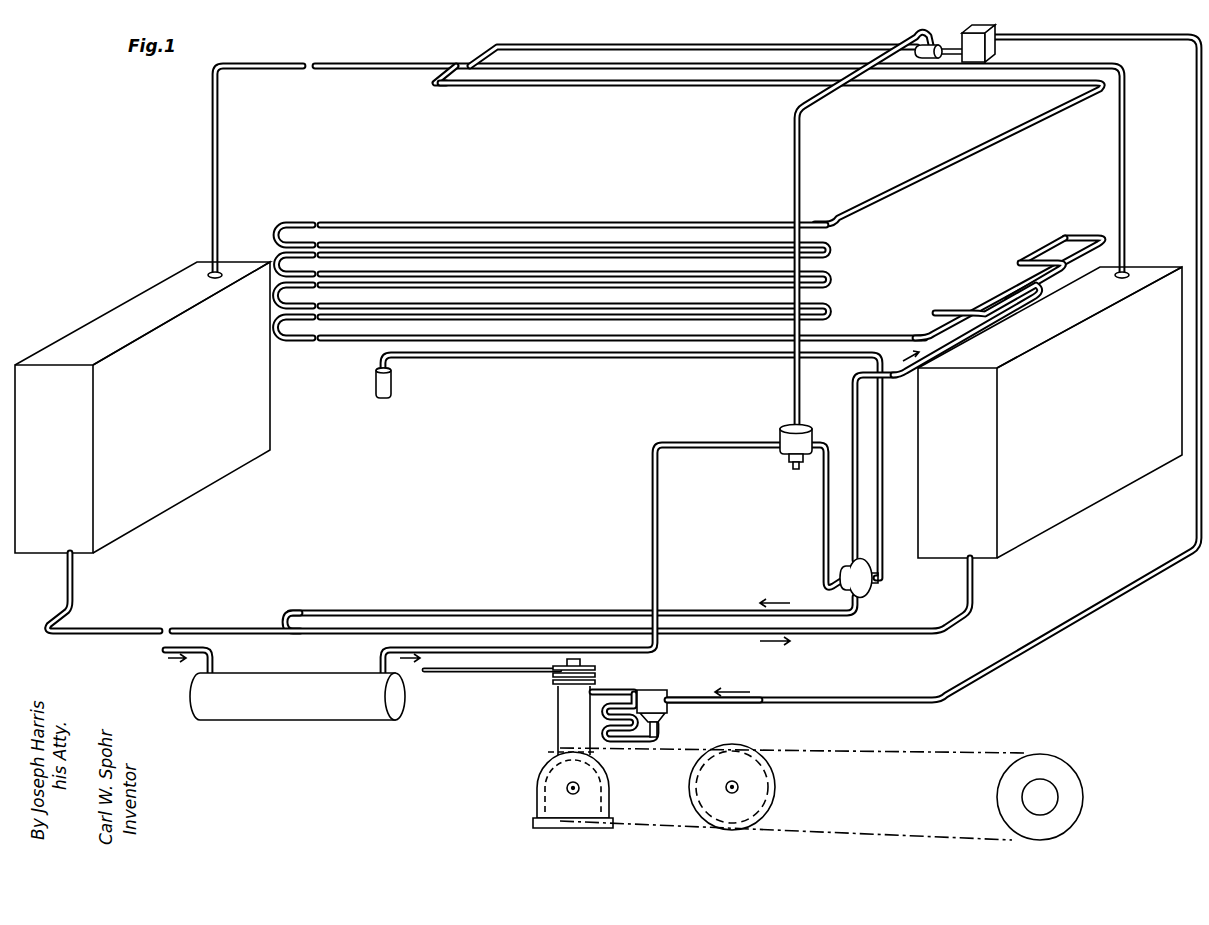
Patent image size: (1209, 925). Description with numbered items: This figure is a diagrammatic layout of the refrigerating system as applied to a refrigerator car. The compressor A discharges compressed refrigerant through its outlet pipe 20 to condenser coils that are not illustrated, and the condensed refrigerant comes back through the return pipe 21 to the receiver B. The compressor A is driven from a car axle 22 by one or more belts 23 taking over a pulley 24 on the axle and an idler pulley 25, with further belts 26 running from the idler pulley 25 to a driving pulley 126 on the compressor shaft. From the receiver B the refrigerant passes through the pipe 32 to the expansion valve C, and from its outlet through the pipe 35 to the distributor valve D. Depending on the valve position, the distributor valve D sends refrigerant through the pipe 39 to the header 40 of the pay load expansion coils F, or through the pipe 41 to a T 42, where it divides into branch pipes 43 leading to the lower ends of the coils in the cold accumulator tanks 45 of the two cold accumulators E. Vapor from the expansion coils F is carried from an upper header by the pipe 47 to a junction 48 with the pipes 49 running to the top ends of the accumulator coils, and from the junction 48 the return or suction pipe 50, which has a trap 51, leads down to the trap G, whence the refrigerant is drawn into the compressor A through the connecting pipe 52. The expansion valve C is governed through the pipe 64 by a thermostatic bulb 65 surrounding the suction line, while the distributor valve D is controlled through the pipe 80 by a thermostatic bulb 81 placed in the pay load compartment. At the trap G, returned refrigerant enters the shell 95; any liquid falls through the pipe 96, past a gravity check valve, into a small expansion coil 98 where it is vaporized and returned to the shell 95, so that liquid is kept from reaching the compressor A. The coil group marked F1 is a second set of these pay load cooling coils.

The outlet pipe 20 is at (471, 673).
The return pipe 21 is at (165, 652).
The car axle 22 is at (1059, 798).
The belts 23 is at (954, 750).
The pulley 24 is at (998, 780).
The idler pulley 25 is at (776, 794).
The belts 26 is at (614, 827).
The pipe 32 is at (661, 456).
The pipe 35 is at (825, 528).
The pipe 39 is at (856, 437).
The header 40 is at (1022, 288).
The pipe 41 is at (565, 612).
The T 42 is at (283, 623).
The branch pipes 43 is at (176, 628).
The cold accumulator tanks 45 is at (190, 490).
The pipe 47 is at (555, 84).
The junction 48 is at (461, 64).
The pipes 49 is at (222, 98).
The return or suction pipe 50 is at (643, 48).
The trap 51 is at (996, 48).
The connecting pipe 52 is at (626, 693).
The pipe 64 is at (792, 382).
The thermostatic bulb 65 is at (940, 45).
The pipe 80 is at (884, 481).
The thermostatic bulb 81 is at (384, 399).
The shell 95 is at (676, 693).
The pipe 96 is at (660, 731).
The expansion coil 98 is at (628, 741).
The driving pulley 126 is at (610, 790).
The compressor A is at (556, 744).
The receiver B is at (297, 716).
The expansion valve C is at (808, 430).
The distributor valve D is at (875, 588).
The cold accumulator E is at (598, 410).
The pay load cooling or expansion coils F is at (350, 320).
The evaporator coil F1 is at (632, 256).
The trap G is at (658, 690).